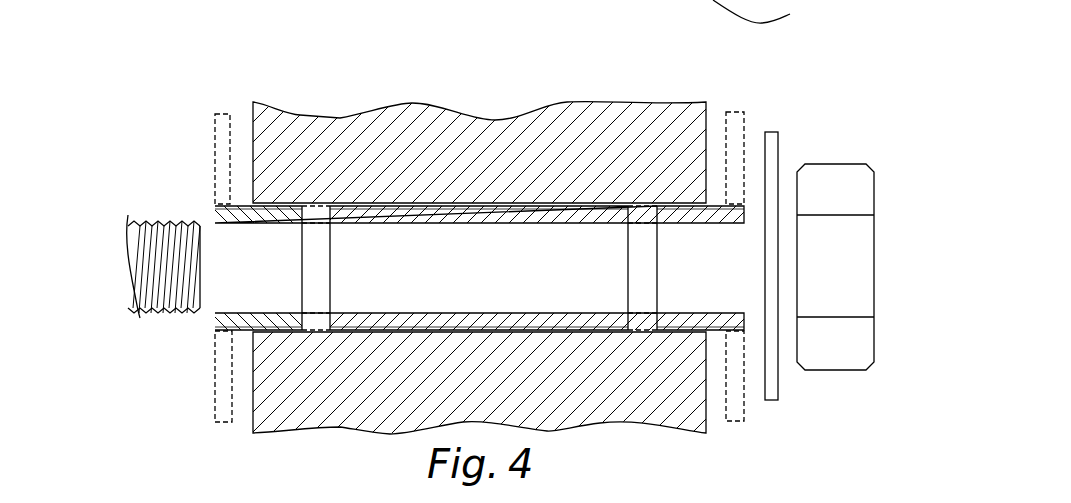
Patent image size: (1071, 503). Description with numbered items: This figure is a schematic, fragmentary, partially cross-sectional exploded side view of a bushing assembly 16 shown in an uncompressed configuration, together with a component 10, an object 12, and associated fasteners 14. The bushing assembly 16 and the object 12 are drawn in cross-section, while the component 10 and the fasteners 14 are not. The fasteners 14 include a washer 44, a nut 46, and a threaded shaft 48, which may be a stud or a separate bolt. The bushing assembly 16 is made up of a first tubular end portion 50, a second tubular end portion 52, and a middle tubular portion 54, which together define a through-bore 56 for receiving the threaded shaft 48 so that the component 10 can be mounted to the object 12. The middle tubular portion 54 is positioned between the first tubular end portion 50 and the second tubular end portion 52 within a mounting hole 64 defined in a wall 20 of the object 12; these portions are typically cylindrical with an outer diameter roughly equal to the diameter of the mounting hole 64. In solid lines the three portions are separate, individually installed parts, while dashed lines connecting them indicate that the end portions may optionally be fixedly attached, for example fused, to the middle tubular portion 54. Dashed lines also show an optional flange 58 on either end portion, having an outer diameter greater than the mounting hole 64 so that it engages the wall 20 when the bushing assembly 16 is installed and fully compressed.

The component 10 is at (116, 190).
The object 12 is at (714, 107).
The fasteners 14 is at (860, 117).
The bushing assembly 16 is at (186, 181).
The wall 20 is at (252, 118).
The washer 44 is at (780, 138).
The nut 46 is at (848, 164).
The threaded shaft 48 is at (175, 222).
The first tubular end portion 50 is at (285, 203).
The second tubular end portion 52 is at (690, 200).
The middle tubular portion 54 is at (420, 205).
The through-bore 56 is at (247, 313).
The flange 58 is at (215, 150).
The mounting hole 64 is at (498, 210).